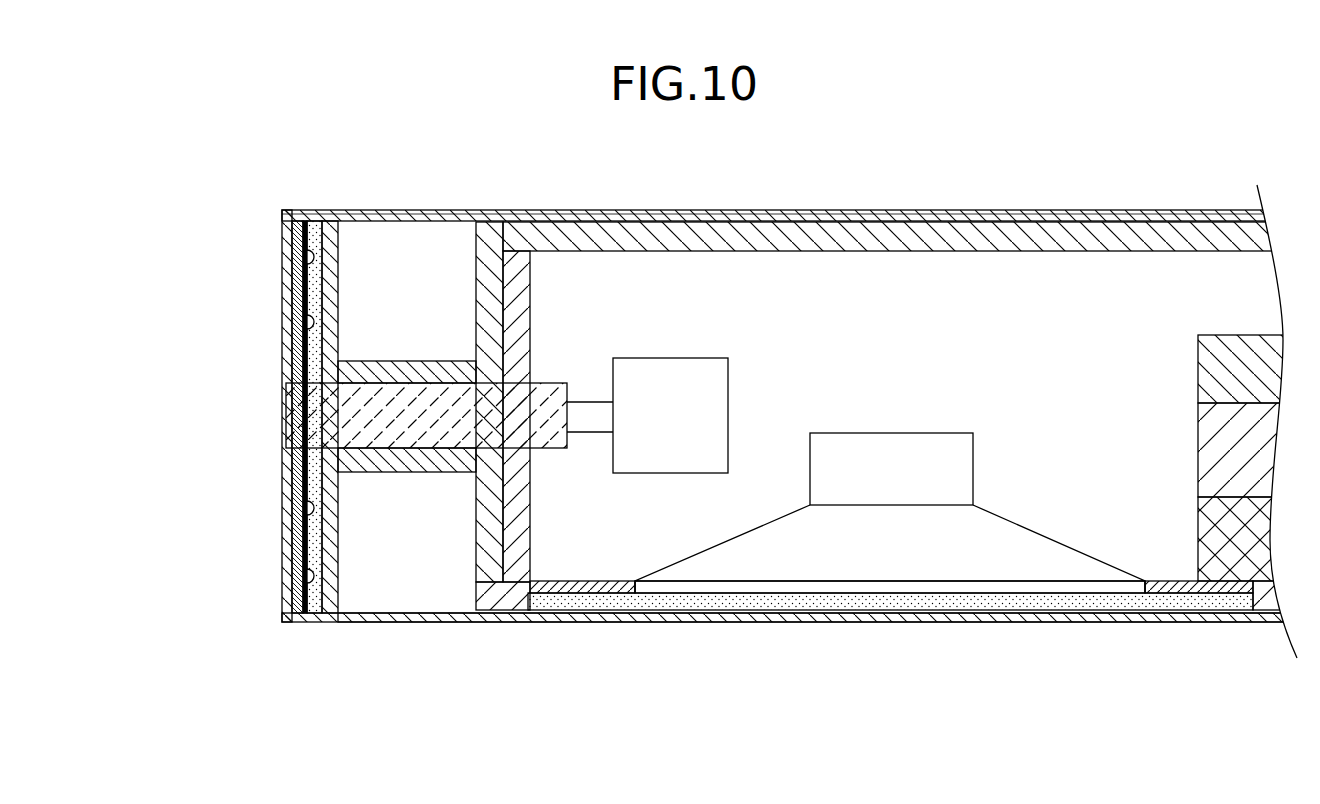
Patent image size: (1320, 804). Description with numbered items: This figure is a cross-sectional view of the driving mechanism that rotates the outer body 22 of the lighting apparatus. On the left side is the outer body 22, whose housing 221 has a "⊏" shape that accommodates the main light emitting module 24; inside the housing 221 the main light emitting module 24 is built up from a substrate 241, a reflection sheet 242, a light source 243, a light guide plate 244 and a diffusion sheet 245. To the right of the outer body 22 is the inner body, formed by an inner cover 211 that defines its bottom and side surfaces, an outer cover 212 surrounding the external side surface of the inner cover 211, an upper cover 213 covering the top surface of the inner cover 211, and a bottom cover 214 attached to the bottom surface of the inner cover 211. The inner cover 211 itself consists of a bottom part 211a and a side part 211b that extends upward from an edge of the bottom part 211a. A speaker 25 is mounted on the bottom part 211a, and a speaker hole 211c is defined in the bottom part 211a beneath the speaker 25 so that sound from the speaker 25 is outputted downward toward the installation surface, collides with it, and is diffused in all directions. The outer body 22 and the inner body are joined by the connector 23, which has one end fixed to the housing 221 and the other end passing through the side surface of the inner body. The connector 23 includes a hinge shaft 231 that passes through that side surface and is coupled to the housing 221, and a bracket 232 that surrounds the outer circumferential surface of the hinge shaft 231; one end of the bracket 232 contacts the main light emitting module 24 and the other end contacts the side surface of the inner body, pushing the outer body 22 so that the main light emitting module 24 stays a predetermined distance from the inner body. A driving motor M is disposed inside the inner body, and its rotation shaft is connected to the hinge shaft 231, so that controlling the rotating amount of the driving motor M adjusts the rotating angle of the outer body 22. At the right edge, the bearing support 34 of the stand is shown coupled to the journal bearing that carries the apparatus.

The outer body 22 is at (147, 160).
The housing 221 is at (313, 213).
The main light emitting module 24 is at (197, 352).
The substrate 241 is at (290, 227).
The reflection sheet 242 is at (290, 236).
The light source 243 is at (312, 323).
The light guide plate 244 is at (312, 348).
The diffusion sheet 245 is at (330, 293).
The connector 23 is at (198, 368).
The hinge shaft 231 is at (315, 413).
The bracket 232 is at (355, 371).
The outer cover 212 is at (487, 300).
The upper cover 213 is at (805, 232).
The bottom cover 214 is at (972, 600).
The inner cover 211 is at (683, 718).
The bottom part 211a is at (603, 580).
The side part 211b is at (530, 540).
The speaker hole 211c is at (702, 590).
The driving motor M is at (673, 383).
The speaker 25 is at (857, 547).
The bearing support 34 is at (1184, 446).